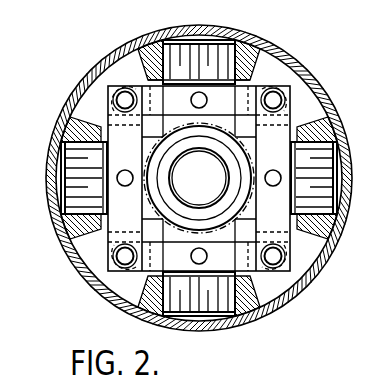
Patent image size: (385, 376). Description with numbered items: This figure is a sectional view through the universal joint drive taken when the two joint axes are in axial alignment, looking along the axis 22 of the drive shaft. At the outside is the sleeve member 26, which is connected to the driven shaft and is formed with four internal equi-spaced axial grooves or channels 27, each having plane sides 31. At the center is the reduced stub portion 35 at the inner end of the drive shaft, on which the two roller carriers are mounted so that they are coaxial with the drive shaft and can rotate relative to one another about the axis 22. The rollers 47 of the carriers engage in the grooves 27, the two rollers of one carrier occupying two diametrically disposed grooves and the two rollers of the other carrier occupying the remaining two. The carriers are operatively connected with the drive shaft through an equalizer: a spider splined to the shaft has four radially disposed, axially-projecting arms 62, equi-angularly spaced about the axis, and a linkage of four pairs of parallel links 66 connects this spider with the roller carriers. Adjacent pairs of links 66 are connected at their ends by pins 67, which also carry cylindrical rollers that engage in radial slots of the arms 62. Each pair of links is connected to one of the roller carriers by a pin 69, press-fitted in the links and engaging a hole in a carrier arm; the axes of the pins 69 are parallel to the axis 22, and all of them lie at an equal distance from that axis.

The axis 22 is at (199, 178).
The sleeve member 26 is at (301, 66).
The axial grooves or channels 27 is at (330, 126).
The plane sides 31 is at (158, 47).
The reduced stub portion 35 is at (199, 178).
The rollers 47 is at (318, 173).
The arms 62 is at (128, 72).
The links 66 is at (161, 110).
The pins 67 is at (118, 93).
The pin 69 is at (122, 170).